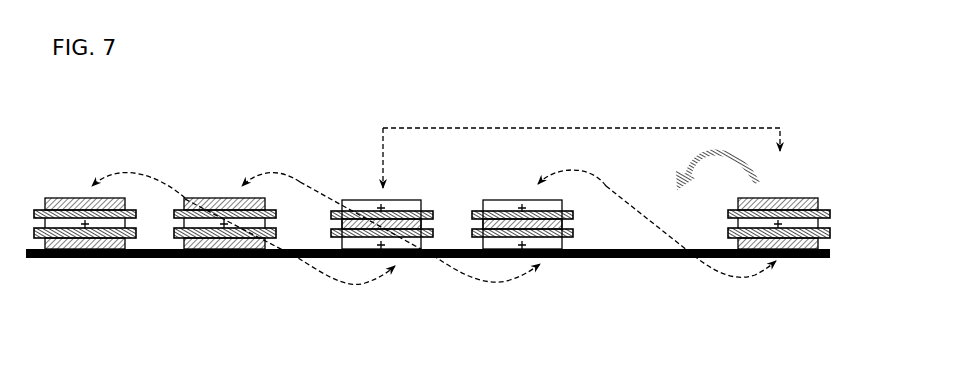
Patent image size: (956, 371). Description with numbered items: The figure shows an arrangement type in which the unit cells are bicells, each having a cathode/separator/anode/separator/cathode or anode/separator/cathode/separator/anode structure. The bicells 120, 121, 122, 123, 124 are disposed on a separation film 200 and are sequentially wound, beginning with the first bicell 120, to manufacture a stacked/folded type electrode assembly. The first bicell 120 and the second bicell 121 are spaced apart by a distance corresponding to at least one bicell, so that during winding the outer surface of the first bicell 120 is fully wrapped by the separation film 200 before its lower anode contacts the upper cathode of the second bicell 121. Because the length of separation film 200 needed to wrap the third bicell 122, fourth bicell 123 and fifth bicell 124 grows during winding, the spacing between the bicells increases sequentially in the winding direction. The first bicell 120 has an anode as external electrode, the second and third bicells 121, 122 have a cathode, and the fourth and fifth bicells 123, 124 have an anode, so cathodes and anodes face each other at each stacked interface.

The first bicell 120 is at (797, 198).
The second bicell 121 is at (513, 199).
The third bicell 122 is at (372, 199).
The fourth bicell 123 is at (207, 198).
The fifth bicell 124 is at (70, 198).
The separation film 200 is at (158, 256).